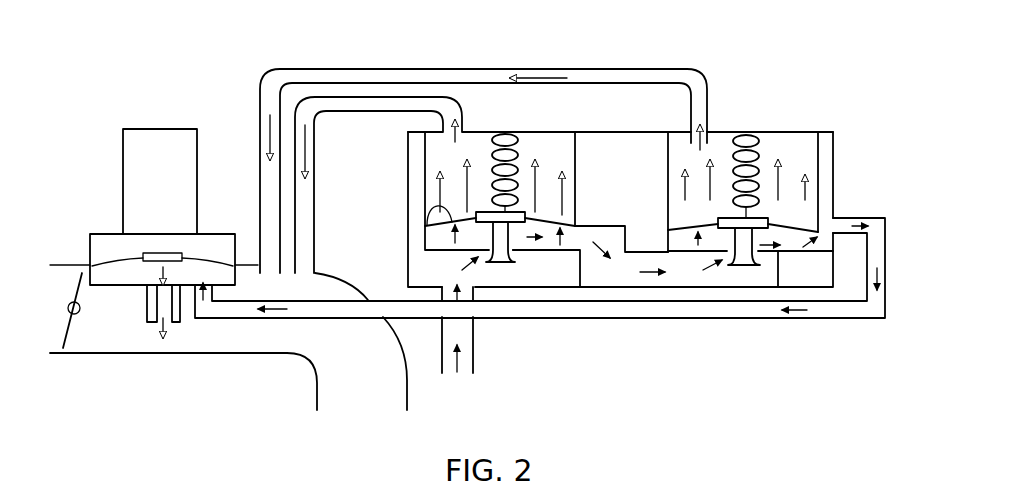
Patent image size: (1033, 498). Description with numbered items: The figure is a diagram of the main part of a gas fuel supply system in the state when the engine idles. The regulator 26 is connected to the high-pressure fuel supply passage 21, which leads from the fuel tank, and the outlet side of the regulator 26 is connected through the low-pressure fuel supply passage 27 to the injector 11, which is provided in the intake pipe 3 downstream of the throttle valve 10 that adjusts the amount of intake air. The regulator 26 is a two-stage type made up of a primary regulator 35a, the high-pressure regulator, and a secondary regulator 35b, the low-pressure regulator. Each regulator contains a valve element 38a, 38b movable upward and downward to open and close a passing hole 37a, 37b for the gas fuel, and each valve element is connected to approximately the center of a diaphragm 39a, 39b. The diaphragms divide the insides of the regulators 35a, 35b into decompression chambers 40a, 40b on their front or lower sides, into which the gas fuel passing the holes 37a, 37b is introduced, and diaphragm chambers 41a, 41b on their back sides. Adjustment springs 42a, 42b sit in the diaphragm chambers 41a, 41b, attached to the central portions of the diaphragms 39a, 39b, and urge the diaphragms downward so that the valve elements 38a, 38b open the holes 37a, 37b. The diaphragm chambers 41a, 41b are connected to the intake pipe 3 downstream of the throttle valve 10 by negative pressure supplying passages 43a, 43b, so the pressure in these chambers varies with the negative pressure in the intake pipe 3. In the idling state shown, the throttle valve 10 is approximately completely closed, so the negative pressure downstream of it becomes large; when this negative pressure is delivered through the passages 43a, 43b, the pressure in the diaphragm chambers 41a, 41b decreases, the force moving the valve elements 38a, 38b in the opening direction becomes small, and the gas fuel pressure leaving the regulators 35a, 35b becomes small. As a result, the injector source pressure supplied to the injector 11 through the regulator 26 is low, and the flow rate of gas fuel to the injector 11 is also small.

The intake pipe 3 is at (247, 357).
The throttle valve 10 is at (72, 318).
The injector 11 is at (133, 126).
The high-pressure fuel supply passage 21 is at (473, 358).
The regulator 26 is at (745, 70).
The low-pressure fuel supply passage 27 is at (652, 318).
The primary regulator 35a is at (540, 131).
The secondary regulator 35b is at (800, 131).
The passing hole 37a is at (522, 259).
The passing hole 37b is at (758, 258).
The valve element 38a is at (500, 240).
The valve element 38b is at (741, 242).
The diaphragm 39a is at (423, 208).
The diaphragm 39b is at (820, 204).
The decompression chamber 40a is at (467, 235).
The decompression chamber 40b is at (683, 240).
The diaphragm chamber 41a is at (570, 160).
The diaphragm chamber 41b is at (808, 160).
The adjustment spring 42a is at (512, 132).
The adjustment spring 42b is at (755, 134).
The negative pressure supplying passage 43a is at (365, 112).
The negative pressure supplying passage 43b is at (492, 68).